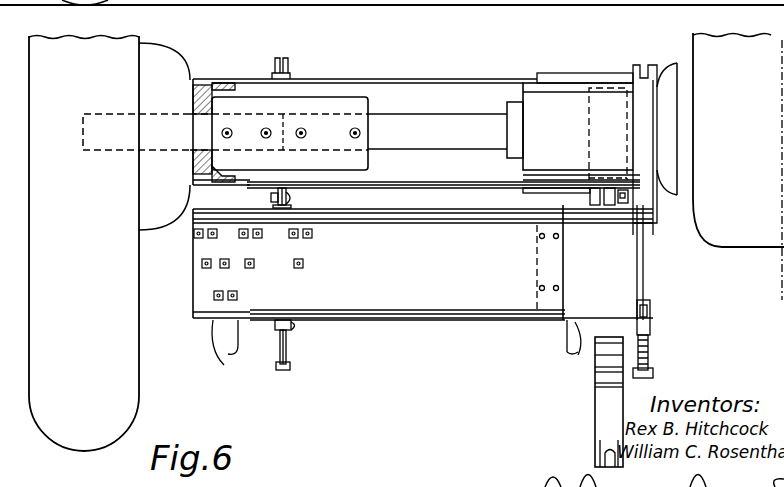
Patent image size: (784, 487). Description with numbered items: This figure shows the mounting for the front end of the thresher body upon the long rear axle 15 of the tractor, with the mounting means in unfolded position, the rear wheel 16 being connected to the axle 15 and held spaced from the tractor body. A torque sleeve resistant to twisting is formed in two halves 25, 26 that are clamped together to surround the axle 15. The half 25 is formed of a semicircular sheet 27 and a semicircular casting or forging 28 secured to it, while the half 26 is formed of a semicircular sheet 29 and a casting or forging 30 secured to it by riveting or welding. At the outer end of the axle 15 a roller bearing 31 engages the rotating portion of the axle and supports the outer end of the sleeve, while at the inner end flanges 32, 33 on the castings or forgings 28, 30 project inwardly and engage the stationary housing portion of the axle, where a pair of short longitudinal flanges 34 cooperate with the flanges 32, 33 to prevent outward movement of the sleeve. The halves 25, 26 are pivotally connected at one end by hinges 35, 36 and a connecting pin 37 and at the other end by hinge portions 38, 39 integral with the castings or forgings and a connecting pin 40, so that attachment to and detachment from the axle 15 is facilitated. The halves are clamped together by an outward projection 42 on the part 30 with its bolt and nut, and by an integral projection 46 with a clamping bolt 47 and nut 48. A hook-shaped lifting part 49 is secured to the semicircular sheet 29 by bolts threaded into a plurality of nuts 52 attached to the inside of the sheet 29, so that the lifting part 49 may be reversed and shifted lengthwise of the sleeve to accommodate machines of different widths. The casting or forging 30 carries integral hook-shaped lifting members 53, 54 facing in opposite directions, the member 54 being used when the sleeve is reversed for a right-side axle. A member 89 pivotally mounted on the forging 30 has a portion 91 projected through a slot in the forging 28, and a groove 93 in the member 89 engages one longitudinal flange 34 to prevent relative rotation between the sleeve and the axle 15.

The long rear axle 15 is at (428, 122).
The rear wheel 16 is at (139, 330).
The sleeve half 25 is at (393, 86).
The sleeve half 26 is at (480, 305).
The semicircular sheet 27 is at (334, 84).
The casting or forging 28 is at (565, 75).
The semicircular sheet 29 is at (352, 305).
The casting or forging 30 is at (572, 327).
The roller bearing 31 is at (203, 92).
The flange 32 is at (652, 80).
The flange 33 is at (650, 308).
The longitudinal flanges 34 is at (578, 88).
The hinge 35 is at (283, 190).
The hinge 36 is at (293, 199).
The connecting pin 37 is at (271, 199).
The hinge portion 38 is at (609, 205).
The hinge portion 39 is at (616, 188).
The connecting pin 40 is at (596, 205).
The outward projection 42 is at (291, 330).
The integral projection 46 is at (288, 63).
The clamping bolt 47 is at (280, 352).
The clamping nut 48 is at (280, 368).
The lifting part 49 is at (224, 356).
The nuts 52 is at (305, 262).
The lifting member 53 is at (568, 355).
The lifting member 54 is at (565, 192).
The locking member 89 is at (596, 405).
The projected portion 91 is at (598, 386).
The groove 93 is at (600, 375).